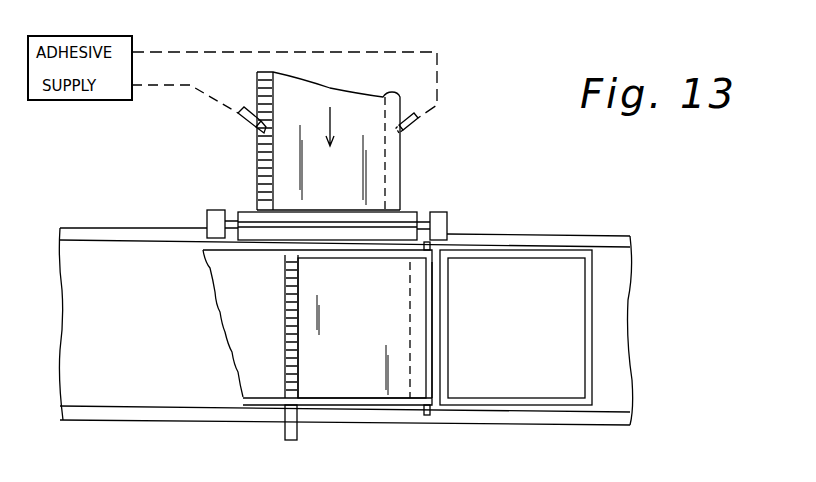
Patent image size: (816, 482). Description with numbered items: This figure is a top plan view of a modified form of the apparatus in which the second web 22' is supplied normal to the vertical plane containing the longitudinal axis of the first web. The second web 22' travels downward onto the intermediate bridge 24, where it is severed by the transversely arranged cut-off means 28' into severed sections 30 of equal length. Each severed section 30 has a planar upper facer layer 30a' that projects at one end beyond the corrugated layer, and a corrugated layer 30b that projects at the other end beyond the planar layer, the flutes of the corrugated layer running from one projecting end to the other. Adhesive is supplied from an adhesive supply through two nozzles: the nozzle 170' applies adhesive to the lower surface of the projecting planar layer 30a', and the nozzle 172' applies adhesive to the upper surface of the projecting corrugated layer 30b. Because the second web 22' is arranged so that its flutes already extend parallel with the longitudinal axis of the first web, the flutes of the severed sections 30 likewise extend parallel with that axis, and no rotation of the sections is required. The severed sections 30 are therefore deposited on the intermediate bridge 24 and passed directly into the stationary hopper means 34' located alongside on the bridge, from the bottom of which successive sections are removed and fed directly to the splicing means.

The intermediate bridge 24 is at (100, 405).
The second web 22' is at (356, 141).
The nozzle 172' is at (225, 131).
The nozzle 170' is at (445, 120).
The cut-off means 28' is at (346, 212).
The severed section 30 is at (370, 318).
The corrugated layer 30b is at (290, 316).
The planar upper facer layer 30a' is at (459, 330).
The stationary hopper means 34' is at (516, 327).